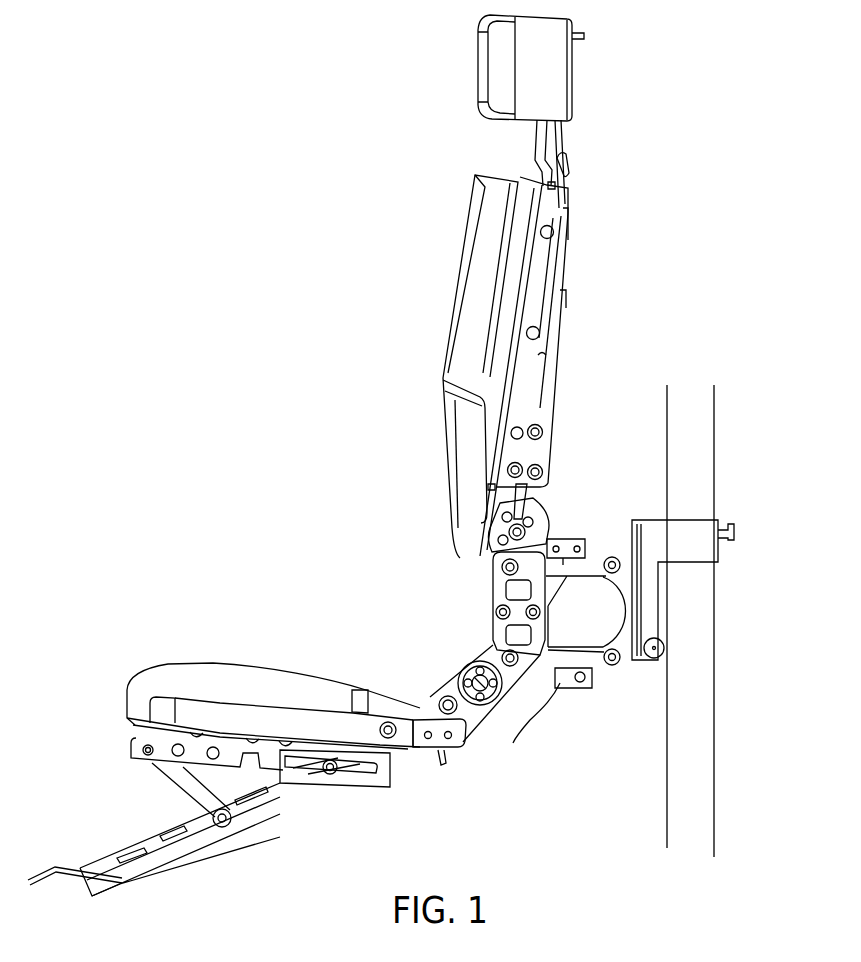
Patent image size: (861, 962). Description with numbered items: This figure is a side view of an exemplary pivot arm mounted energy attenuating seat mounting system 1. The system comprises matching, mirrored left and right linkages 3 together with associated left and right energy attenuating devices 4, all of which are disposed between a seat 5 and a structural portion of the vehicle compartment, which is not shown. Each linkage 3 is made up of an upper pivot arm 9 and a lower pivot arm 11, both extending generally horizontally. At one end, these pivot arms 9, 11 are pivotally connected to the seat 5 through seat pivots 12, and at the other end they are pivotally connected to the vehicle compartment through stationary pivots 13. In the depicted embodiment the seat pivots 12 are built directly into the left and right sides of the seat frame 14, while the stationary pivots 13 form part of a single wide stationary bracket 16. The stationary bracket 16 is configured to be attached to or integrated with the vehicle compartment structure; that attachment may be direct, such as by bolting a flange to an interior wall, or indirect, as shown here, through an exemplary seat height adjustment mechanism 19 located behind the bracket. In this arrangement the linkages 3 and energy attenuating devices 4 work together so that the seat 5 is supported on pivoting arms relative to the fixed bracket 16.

The energy attenuating seat mounting system 1 is at (726, 300).
The linkage 3 is at (578, 736).
The energy attenuating device 4 is at (542, 692).
The seat 5 is at (140, 591).
The upper pivot arm 9 is at (601, 548).
The lower pivot arm 11 is at (576, 648).
The seat pivot 12 is at (494, 650).
The stationary pivot 13 is at (613, 556).
The seat frame 14 is at (450, 677).
The stationary bracket 16 is at (619, 575).
The seat height adjustment mechanism 19 is at (728, 530).